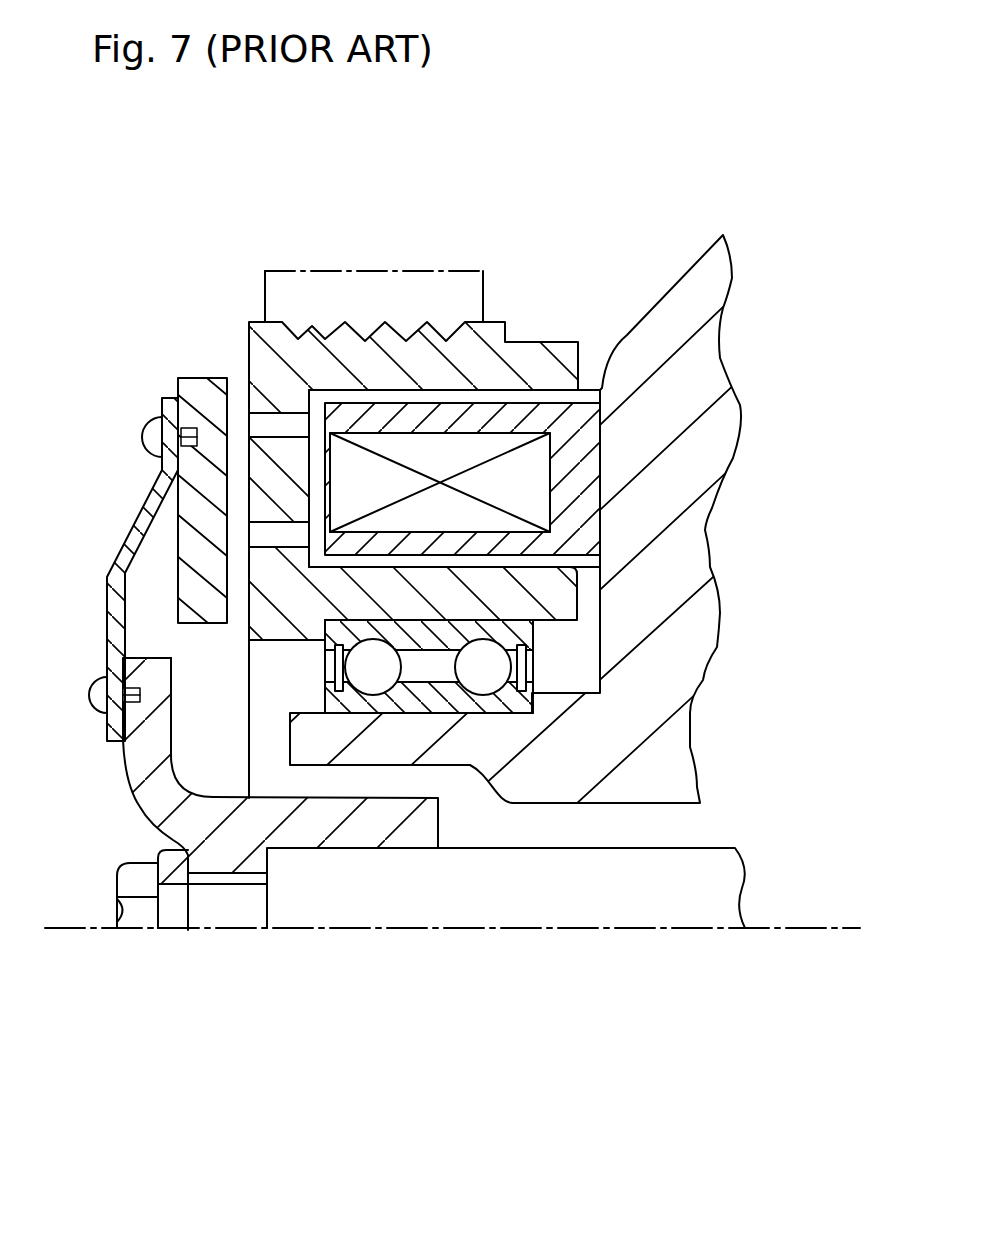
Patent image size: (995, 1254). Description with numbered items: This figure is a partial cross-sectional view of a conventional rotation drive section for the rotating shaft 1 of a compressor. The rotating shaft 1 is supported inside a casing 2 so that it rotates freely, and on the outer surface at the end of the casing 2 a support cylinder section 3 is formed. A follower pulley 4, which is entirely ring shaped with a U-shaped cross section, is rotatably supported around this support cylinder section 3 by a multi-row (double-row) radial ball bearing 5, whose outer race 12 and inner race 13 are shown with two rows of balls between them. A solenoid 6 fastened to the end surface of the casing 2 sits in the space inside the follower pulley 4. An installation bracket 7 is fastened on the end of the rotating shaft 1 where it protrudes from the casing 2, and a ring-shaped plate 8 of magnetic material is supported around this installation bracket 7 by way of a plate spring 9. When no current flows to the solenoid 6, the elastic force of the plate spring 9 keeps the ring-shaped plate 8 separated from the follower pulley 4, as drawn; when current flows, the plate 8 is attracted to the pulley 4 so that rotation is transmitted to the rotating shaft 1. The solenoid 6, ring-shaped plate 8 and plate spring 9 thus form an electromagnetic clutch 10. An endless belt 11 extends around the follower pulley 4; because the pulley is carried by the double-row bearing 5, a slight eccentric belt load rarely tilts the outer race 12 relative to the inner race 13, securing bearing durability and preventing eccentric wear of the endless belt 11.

The rotating shaft 1 is at (490, 905).
The casing 2 is at (707, 383).
The support cylinder section 3 is at (377, 750).
The follower pulley 4 is at (322, 360).
The multi-row radial ball bearing 5 is at (513, 700).
The solenoid 6 is at (482, 448).
The installation bracket 7 is at (153, 810).
The ring-shaped plate 8 is at (197, 517).
The plate spring 9 is at (127, 555).
The electromagnetic clutch 10 is at (200, 477).
The endless belt 11 is at (415, 272).
The outer race 12 is at (480, 618).
The inner race 13 is at (347, 712).